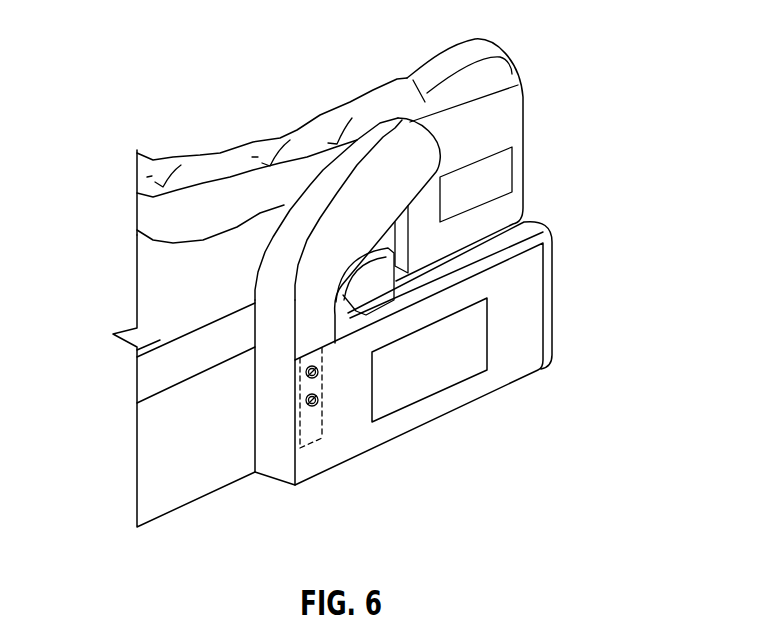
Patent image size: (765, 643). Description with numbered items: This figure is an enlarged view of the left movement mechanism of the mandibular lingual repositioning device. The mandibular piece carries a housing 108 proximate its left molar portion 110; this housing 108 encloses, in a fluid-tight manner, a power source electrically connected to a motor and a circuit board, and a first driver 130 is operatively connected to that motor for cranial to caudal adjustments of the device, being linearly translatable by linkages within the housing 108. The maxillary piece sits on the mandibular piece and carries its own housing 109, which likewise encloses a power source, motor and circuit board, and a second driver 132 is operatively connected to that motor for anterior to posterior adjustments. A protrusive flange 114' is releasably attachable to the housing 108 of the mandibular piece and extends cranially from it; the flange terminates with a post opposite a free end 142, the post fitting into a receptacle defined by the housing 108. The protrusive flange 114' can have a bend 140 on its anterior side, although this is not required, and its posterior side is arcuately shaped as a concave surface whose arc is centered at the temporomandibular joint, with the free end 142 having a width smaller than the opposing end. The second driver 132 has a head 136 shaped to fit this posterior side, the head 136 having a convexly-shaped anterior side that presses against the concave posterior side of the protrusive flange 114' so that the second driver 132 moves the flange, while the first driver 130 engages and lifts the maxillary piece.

The housing 108 is at (527, 330).
The housing 109 is at (525, 182).
The left molar portion 110 is at (193, 503).
The protrusive flange 114' is at (188, 378).
The first driver 130 is at (533, 210).
The second driver 132 is at (415, 252).
The head 136 is at (377, 262).
The bend 140 is at (272, 240).
The free end 142 is at (352, 186).